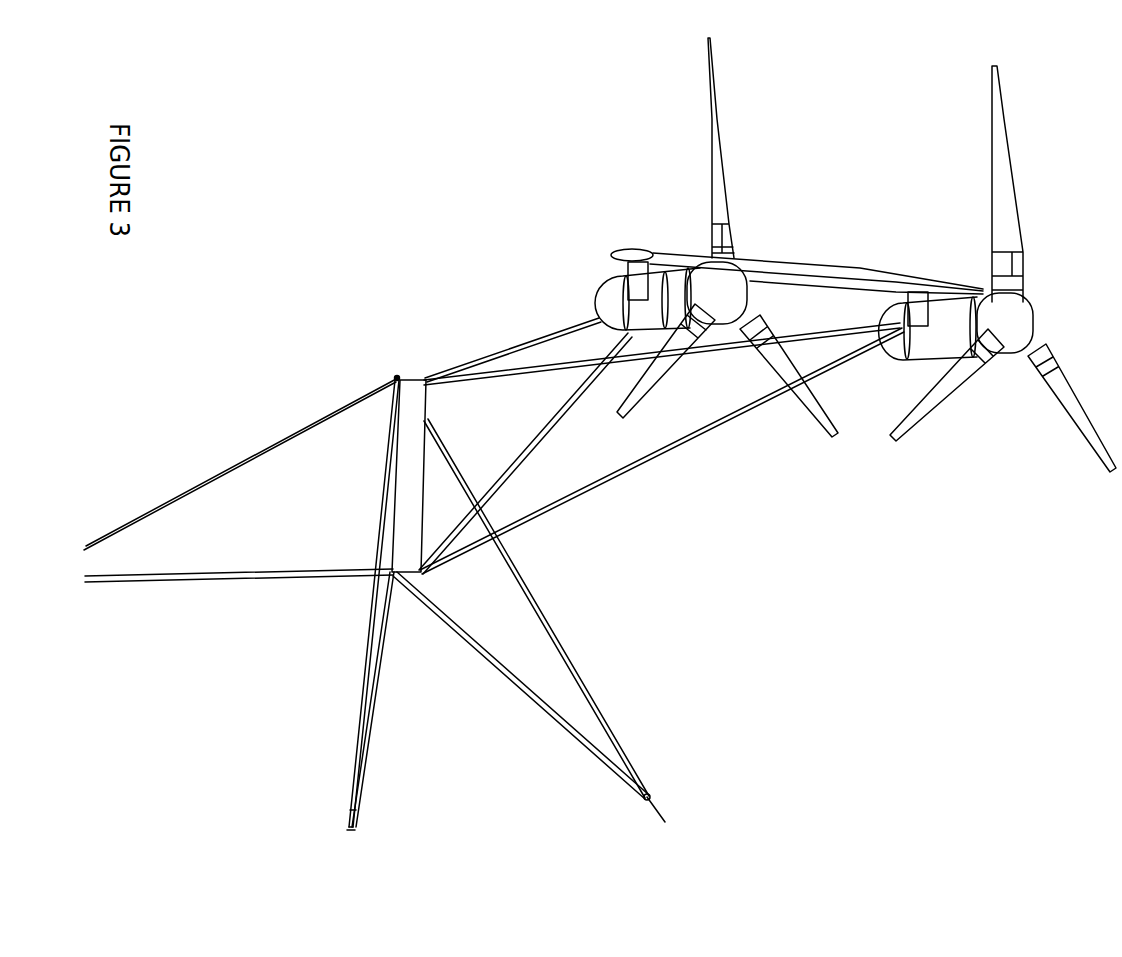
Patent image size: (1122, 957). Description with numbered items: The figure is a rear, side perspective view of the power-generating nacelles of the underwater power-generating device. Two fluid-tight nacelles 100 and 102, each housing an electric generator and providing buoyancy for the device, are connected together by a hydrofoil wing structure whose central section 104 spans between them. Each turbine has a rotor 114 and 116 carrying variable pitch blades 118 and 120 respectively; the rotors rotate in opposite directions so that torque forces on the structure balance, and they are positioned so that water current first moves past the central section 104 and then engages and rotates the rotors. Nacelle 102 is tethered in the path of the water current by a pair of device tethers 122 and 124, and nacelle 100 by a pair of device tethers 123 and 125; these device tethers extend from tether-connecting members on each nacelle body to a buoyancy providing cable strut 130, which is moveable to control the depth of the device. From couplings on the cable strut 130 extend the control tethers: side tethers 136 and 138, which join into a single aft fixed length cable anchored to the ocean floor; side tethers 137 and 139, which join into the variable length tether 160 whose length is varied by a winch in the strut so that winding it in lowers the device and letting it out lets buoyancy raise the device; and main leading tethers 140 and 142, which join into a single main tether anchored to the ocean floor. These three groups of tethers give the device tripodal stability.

The nacelle 100 is at (895, 350).
The nacelle 102 is at (605, 294).
The central section 104 is at (877, 274).
The rotor 114 is at (1025, 323).
The rotor 116 is at (735, 289).
The variable pitch blades 118 is at (1000, 123).
The variable pitch blades 120 is at (713, 91).
The device tether 122 is at (567, 407).
The device tether 123 is at (708, 428).
The device tether 124 is at (565, 332).
The device tether 125 is at (535, 367).
The cable strut 130 is at (412, 447).
The side tether 136 is at (553, 637).
The side tether 137 is at (372, 600).
The side tether 138 is at (513, 683).
The side tether 139 is at (382, 635).
The main leading tether 140 is at (213, 577).
The main leading tether 142 is at (240, 467).
The variable length tether 160 is at (358, 803).